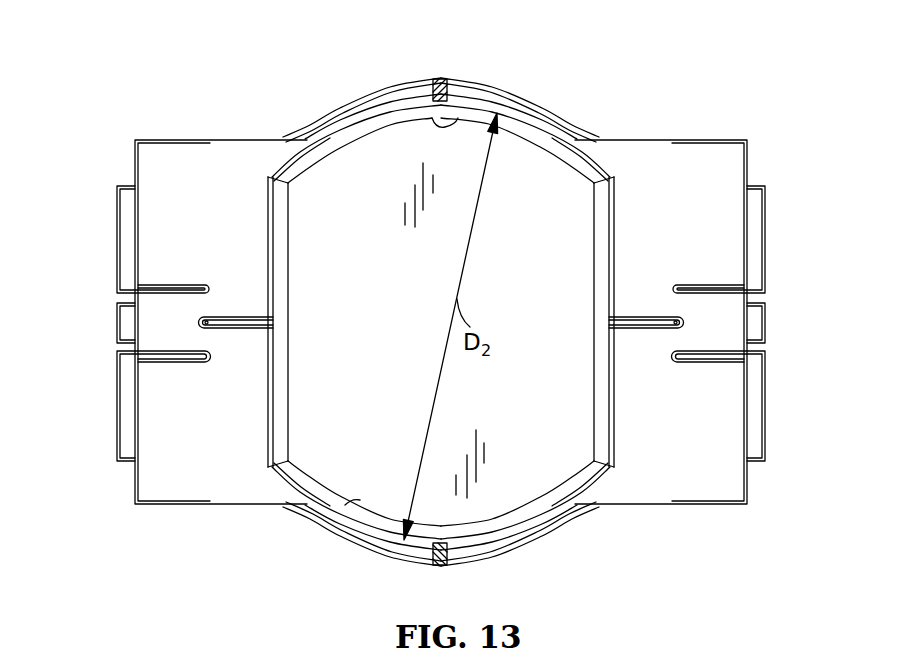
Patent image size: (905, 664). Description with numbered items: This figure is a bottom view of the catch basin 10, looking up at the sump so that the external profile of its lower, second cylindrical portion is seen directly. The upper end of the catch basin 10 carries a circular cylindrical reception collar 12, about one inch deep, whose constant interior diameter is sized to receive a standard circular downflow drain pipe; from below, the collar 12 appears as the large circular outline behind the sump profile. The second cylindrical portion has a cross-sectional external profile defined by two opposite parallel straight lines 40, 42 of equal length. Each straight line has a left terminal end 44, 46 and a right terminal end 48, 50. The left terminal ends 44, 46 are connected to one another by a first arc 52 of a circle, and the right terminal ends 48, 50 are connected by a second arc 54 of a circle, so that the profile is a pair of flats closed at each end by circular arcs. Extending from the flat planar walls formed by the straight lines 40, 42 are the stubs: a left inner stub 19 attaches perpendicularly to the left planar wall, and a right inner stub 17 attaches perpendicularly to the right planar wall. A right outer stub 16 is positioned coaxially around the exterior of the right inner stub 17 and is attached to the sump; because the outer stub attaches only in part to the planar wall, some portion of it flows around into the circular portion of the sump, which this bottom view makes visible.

The catch basin 10 is at (192, 182).
The circular cylindrical reception collar 12 is at (363, 92).
The right outer stub 16 is at (703, 160).
The right inner stub 17 is at (755, 216).
The left inner stub 19 is at (138, 222).
The straight line 40 is at (290, 266).
The straight line 42 is at (594, 266).
The left terminal end 44 is at (290, 183).
The left terminal end 46 is at (592, 183).
The right terminal end 48 is at (292, 465).
The right terminal end 50 is at (592, 465).
The first arc 52 is at (463, 122).
The second arc 54 is at (365, 548).